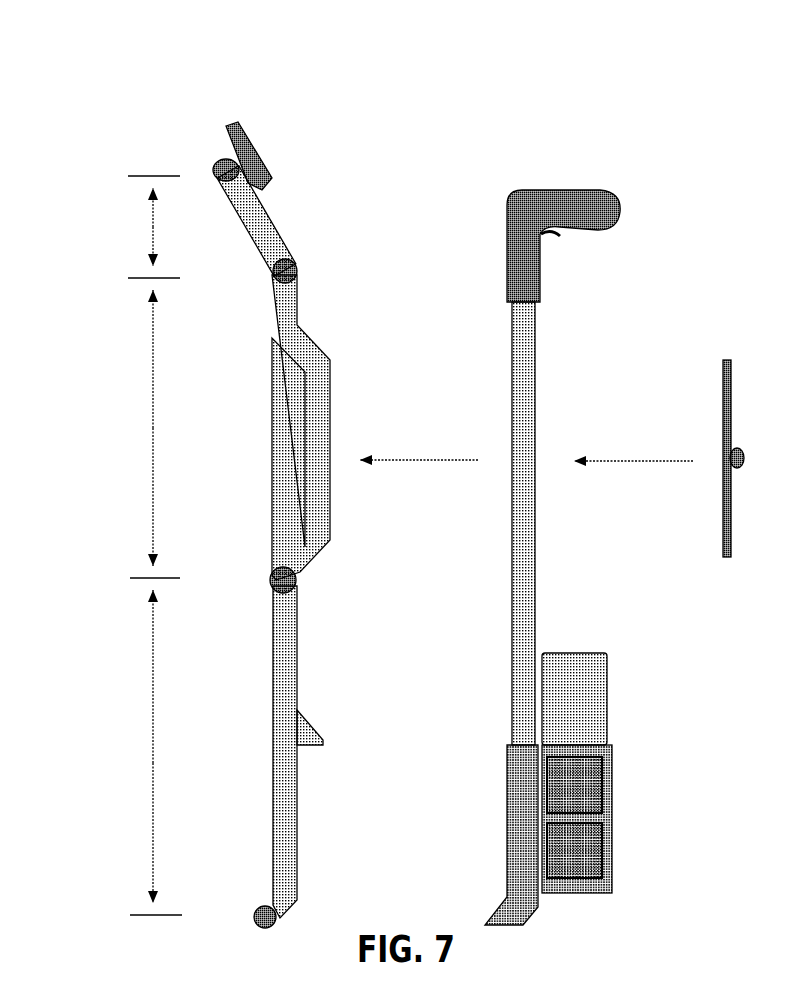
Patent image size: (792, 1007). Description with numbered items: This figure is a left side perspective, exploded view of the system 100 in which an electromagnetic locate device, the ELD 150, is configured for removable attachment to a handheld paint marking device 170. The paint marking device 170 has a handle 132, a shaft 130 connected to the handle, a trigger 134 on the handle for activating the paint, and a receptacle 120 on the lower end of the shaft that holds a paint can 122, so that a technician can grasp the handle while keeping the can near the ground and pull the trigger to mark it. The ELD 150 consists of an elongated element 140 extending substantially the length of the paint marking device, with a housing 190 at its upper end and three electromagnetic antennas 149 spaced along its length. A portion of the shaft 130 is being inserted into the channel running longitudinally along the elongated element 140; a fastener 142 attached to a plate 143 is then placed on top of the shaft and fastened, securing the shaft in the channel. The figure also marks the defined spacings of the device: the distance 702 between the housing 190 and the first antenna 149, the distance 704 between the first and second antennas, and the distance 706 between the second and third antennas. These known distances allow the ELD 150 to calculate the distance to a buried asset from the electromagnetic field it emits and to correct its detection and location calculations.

The system 100 is at (393, 66).
The receptacle 120 is at (614, 855).
The paint can 122 is at (606, 657).
The shaft 130 is at (537, 386).
The handle 132 is at (620, 222).
The trigger 134 is at (565, 240).
The elongated element 140 is at (298, 302).
The fastener 142 is at (738, 446).
The plate 143 is at (729, 361).
The electromagnetic antenna 149 is at (298, 270).
The electromagnetic locate device (ELD) 150 is at (272, 816).
The handheld paint marking device 170 is at (538, 540).
The housing 190 is at (253, 153).
The distance 702 is at (150, 228).
The distance 704 is at (150, 429).
The distance 706 is at (150, 764).